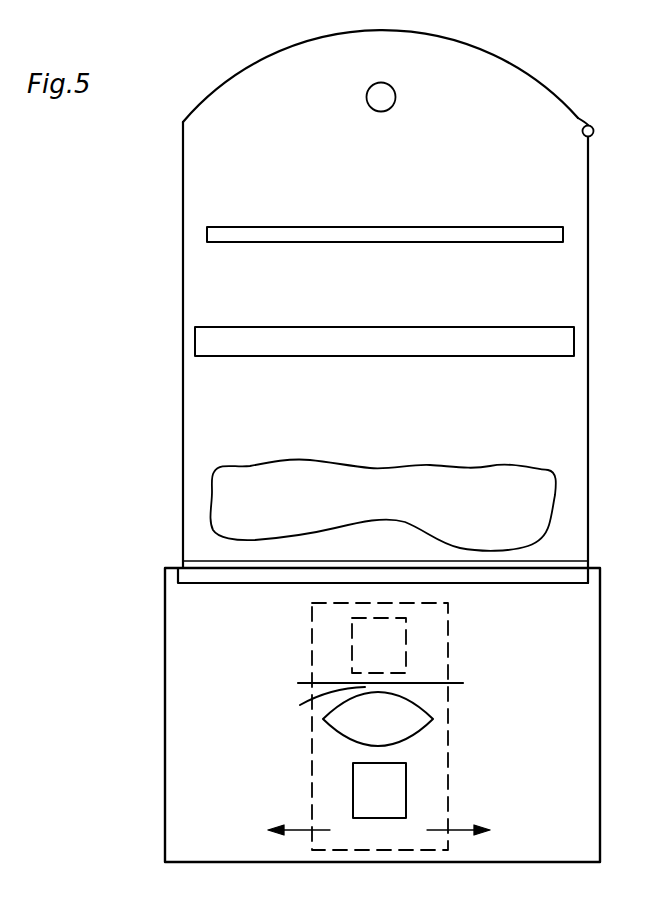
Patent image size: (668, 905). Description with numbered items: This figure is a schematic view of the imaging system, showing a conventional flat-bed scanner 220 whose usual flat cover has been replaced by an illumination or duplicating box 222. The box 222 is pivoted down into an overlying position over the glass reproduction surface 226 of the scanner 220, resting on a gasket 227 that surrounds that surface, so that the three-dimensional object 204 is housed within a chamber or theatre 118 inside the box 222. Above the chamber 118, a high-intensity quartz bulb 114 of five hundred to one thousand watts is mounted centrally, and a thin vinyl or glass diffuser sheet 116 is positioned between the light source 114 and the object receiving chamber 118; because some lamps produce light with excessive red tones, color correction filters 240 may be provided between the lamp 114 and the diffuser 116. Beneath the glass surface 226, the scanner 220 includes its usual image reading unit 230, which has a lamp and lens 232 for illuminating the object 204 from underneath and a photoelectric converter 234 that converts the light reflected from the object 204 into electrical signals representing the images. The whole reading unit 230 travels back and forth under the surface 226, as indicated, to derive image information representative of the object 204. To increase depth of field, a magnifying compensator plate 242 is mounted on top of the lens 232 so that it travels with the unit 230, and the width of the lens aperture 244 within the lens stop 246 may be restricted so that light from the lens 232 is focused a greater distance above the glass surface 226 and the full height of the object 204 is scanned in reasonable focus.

The quartz bulb 114 is at (396, 96).
The color correction filters 240 is at (360, 227).
The diffuser sheet 116 is at (362, 327).
The object receiving chamber 118 is at (392, 403).
The three-dimensional object 204 is at (462, 470).
The illumination box 222 is at (588, 436).
The gasket 227 is at (562, 561).
The glass reproduction surface 226 is at (583, 584).
The flat-bed scanner 220 is at (600, 787).
The image reading unit 230 is at (456, 638).
The compensator plate 242 is at (352, 643).
The lens stop 246 is at (305, 682).
The lens aperture 244 is at (302, 703).
The lamp and lens 232 is at (433, 718).
The photoelectric converter 234 is at (406, 792).